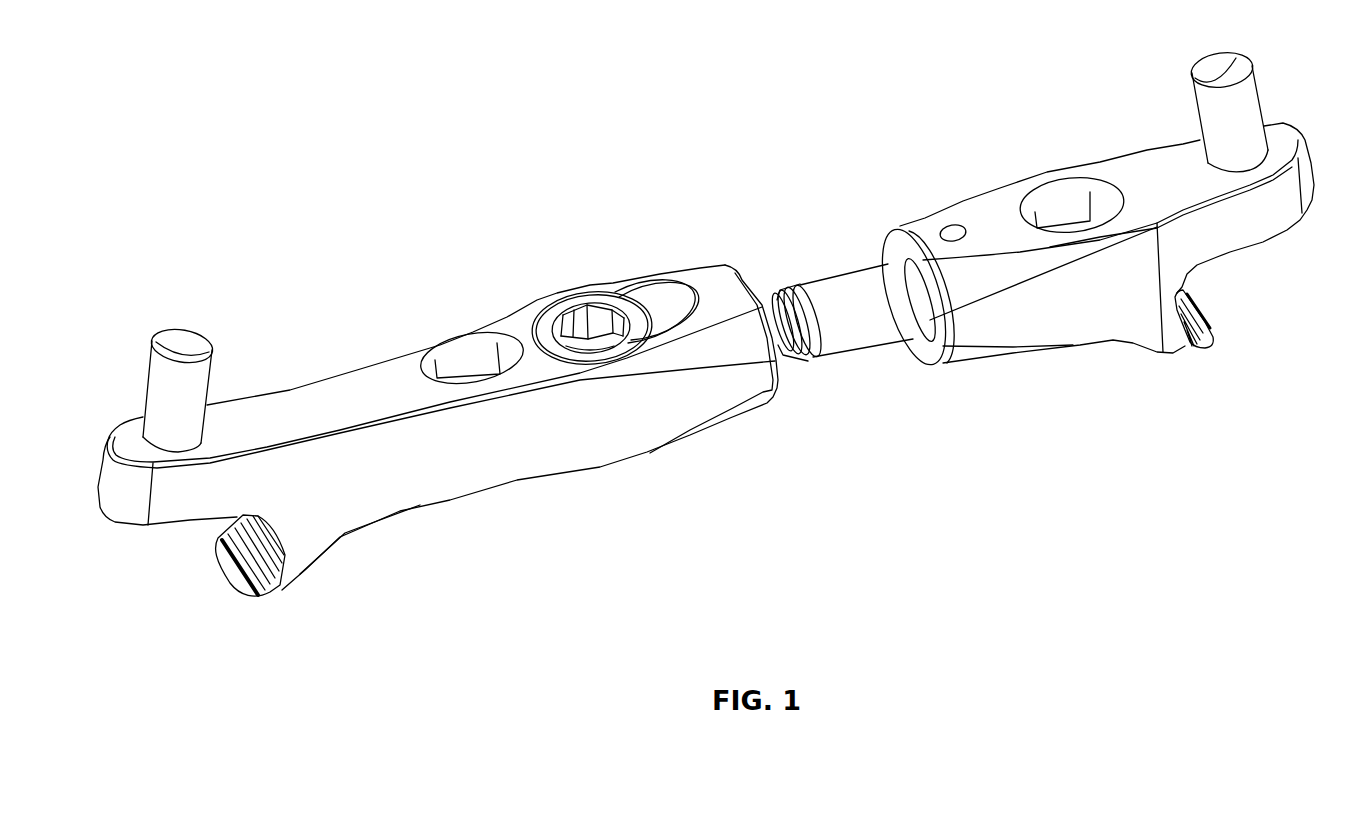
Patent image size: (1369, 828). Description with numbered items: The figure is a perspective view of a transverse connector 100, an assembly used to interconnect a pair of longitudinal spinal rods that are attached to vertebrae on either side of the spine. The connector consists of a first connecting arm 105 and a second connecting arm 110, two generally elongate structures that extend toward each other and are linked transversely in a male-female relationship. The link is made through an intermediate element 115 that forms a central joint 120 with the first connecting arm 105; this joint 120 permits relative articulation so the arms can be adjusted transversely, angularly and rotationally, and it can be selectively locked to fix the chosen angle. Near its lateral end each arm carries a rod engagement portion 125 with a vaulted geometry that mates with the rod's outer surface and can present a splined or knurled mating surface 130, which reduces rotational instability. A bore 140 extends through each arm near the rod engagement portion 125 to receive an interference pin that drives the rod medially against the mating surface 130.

The transverse connector 100 is at (157, 151).
The first connecting arm 105 is at (358, 372).
The second connecting arm 110 is at (1082, 172).
The intermediate element 115 is at (812, 282).
The central joint 120 is at (790, 378).
The rod engagement portion 125 is at (207, 546).
The knurled mating surface 130 is at (278, 573).
The bore 140 is at (132, 432).